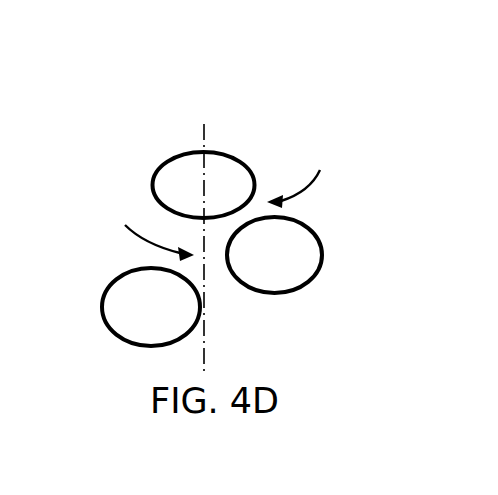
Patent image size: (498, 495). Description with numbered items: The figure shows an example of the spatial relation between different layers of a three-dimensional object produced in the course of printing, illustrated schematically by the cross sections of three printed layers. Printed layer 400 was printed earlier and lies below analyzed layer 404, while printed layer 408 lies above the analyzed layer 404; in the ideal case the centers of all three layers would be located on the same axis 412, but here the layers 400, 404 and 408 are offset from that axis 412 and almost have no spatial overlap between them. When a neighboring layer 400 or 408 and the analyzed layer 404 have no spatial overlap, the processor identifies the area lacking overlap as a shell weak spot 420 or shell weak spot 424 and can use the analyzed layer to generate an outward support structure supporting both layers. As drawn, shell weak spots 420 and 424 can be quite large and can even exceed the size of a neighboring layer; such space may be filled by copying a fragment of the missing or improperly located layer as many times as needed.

The printed layer 400 is at (112, 290).
The analyzed layer 404 is at (323, 242).
The printed layer 408 is at (173, 172).
The axis 412 is at (205, 120).
The shell weak spot 420 is at (305, 174).
The shell weak spot 424 is at (134, 234).